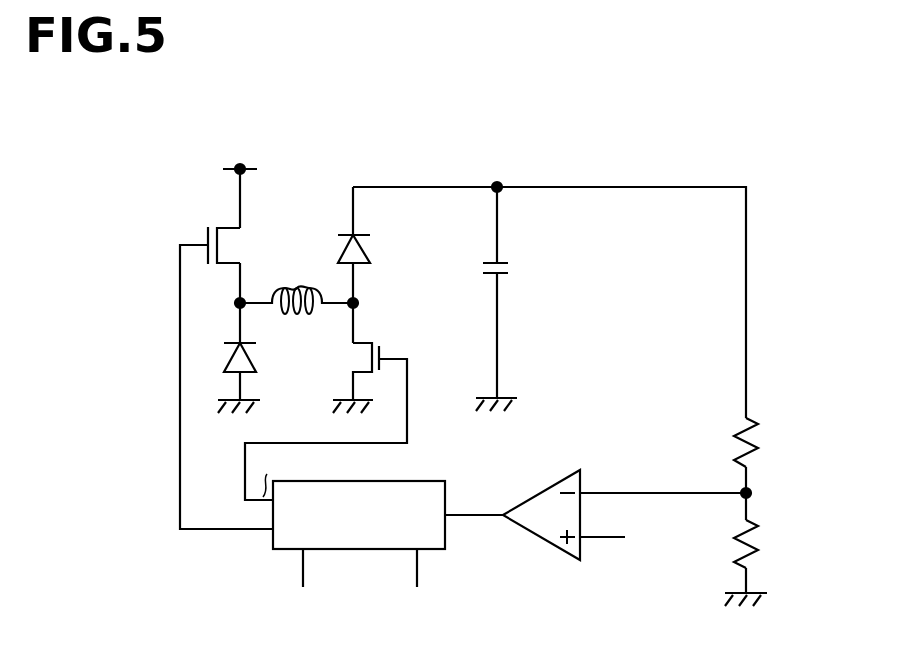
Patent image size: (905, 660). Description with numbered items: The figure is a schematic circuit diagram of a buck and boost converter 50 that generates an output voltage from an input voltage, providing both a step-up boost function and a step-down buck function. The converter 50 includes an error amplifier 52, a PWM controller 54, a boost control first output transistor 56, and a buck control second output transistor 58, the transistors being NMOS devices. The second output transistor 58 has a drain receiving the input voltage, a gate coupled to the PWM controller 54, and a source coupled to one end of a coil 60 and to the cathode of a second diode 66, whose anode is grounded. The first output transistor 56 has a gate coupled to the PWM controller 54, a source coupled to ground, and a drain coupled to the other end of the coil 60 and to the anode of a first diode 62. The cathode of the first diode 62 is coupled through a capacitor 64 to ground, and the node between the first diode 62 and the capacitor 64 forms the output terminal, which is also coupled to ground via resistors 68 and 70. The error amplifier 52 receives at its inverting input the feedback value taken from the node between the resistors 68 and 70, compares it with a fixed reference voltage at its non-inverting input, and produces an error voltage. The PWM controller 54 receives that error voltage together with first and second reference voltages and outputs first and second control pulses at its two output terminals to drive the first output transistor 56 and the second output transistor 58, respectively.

The buck and boost converter 50 is at (685, 142).
The error amplifier 52 is at (550, 483).
The PWM controller 54 is at (272, 542).
The boost control first output transistor 56 is at (363, 341).
The buck control second output transistor 58 is at (233, 227).
The coil 60 is at (273, 292).
The first diode 62 is at (363, 249).
The capacitor 64 is at (503, 273).
The second diode 66 is at (255, 357).
The resistor 68 is at (757, 432).
The resistor 70 is at (757, 532).